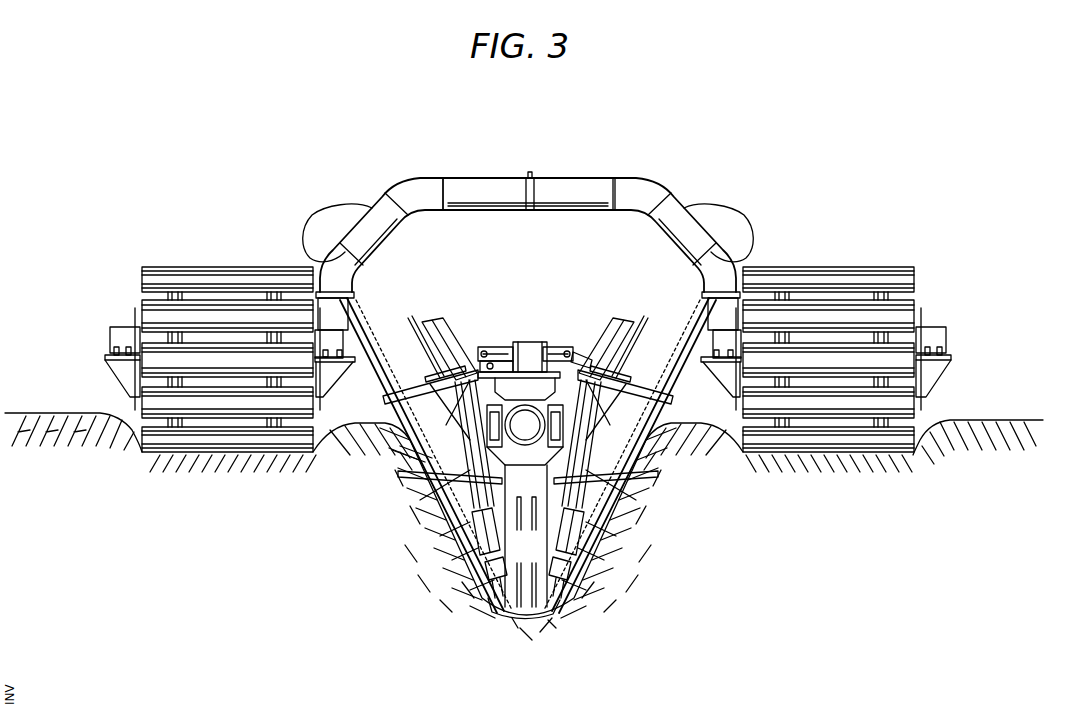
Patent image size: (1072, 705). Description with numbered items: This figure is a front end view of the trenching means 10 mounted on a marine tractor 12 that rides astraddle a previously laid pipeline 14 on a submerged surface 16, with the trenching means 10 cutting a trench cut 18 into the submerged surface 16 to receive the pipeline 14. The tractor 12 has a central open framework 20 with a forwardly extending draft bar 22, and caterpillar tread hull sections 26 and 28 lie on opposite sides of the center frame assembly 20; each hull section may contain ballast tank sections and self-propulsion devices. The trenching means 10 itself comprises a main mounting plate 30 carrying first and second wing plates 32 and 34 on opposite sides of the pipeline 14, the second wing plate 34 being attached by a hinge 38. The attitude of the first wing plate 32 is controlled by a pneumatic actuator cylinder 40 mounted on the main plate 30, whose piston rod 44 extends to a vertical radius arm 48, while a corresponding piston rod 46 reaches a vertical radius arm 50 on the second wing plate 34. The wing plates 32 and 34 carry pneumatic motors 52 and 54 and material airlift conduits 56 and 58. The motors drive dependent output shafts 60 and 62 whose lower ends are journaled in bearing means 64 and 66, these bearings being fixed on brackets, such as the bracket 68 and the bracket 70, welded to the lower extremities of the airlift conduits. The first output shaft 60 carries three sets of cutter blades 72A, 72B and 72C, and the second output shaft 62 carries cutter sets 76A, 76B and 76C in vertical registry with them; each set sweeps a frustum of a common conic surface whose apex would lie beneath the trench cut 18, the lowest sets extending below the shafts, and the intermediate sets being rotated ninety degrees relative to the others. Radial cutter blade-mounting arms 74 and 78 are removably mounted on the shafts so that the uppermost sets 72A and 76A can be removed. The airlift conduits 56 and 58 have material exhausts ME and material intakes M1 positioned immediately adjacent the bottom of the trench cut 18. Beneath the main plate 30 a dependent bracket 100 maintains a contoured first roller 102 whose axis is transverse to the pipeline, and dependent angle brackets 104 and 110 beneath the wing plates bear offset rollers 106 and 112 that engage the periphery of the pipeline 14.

The trenching means 10 is at (537, 334).
The marine tractor 12 is at (686, 208).
The pipeline 14 is at (445, 540).
The submerged surface 16 is at (982, 421).
The trench cut 18 is at (470, 620).
The open framework 20 is at (428, 190).
The draft bar 22 is at (536, 192).
The caterpillar tread hull section 26 is at (222, 262).
The caterpillar tread hull section 28 is at (836, 262).
The main mounting plate 30 is at (568, 335).
The first wing plate 32 is at (674, 400).
The second wing plate 34 is at (382, 400).
The hinge 38 is at (436, 330).
The pneumatic actuator cylinder 40 is at (520, 345).
The piston rod 44 is at (546, 342).
The piston rod 46 is at (500, 345).
The vertical radius arm 48 is at (602, 330).
The vertical radius arm 50 is at (476, 345).
The pneumatic motor 52 is at (628, 336).
The pneumatic motor 54 is at (430, 332).
The material airlift conduit 56 is at (676, 296).
The material airlift conduit 58 is at (380, 296).
The first output shaft 60 is at (640, 506).
The second output shaft 62 is at (430, 506).
The bearing means 64 is at (596, 586).
The bearing means 66 is at (494, 612).
The right lower block 68 is at (586, 566).
The bracket 70 is at (486, 598).
The first set of cutter blades 72A is at (606, 543).
The second set of cutter blades 72B is at (618, 556).
The third set of cutter blades 72C is at (572, 616).
The radial cutter blade-mounting arms 74 is at (562, 492).
The first set of cutter blades 76A is at (432, 558).
The second set of cutter blades 76B is at (458, 574).
The third set of cutter blades 76C is at (492, 638).
The radial cutter blade mounting arms 78 is at (492, 486).
The dependent bracket 100 is at (400, 476).
The contoured first roller 102 is at (548, 345).
The dependent angle bracket 104 is at (636, 468).
The first offset roller 106 is at (634, 482).
The dependent angle bracket 110 is at (378, 460).
The first offset roller 112 is at (388, 500).
The material exhaust ME is at (300, 218).
The material intake M1 is at (516, 650).